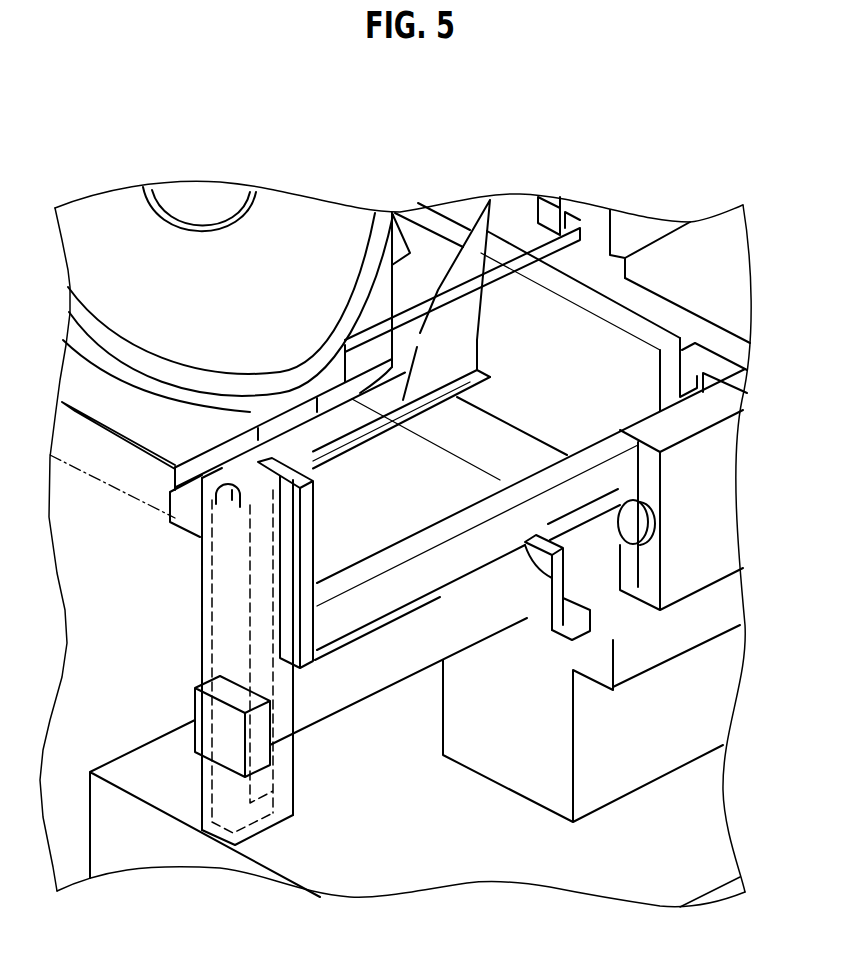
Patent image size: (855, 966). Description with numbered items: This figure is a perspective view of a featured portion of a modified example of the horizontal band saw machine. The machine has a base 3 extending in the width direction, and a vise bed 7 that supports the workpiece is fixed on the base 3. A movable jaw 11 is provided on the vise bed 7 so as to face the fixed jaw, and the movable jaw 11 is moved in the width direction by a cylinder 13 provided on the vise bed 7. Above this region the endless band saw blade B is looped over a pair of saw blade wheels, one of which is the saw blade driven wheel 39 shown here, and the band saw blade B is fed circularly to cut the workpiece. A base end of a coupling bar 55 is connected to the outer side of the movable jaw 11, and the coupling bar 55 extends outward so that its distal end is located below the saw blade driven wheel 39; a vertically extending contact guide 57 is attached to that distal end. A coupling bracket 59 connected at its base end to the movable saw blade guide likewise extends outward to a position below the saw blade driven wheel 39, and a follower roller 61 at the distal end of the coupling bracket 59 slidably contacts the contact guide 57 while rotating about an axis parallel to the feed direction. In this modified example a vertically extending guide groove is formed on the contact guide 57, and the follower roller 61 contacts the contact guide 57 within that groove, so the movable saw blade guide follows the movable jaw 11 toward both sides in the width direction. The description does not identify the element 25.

The base 3 is at (451, 861).
The vise bed 7 is at (652, 775).
The movable jaw 11 is at (707, 368).
The cylinder 13 is at (326, 708).
The beam 25 is at (477, 450).
The saw blade driven wheel 39 is at (278, 222).
The coupling bar 55 is at (387, 590).
The contact guide 57 is at (205, 591).
The coupling bracket 59 is at (340, 425).
The follower roller 61 is at (222, 494).
The band saw blade B is at (500, 272).